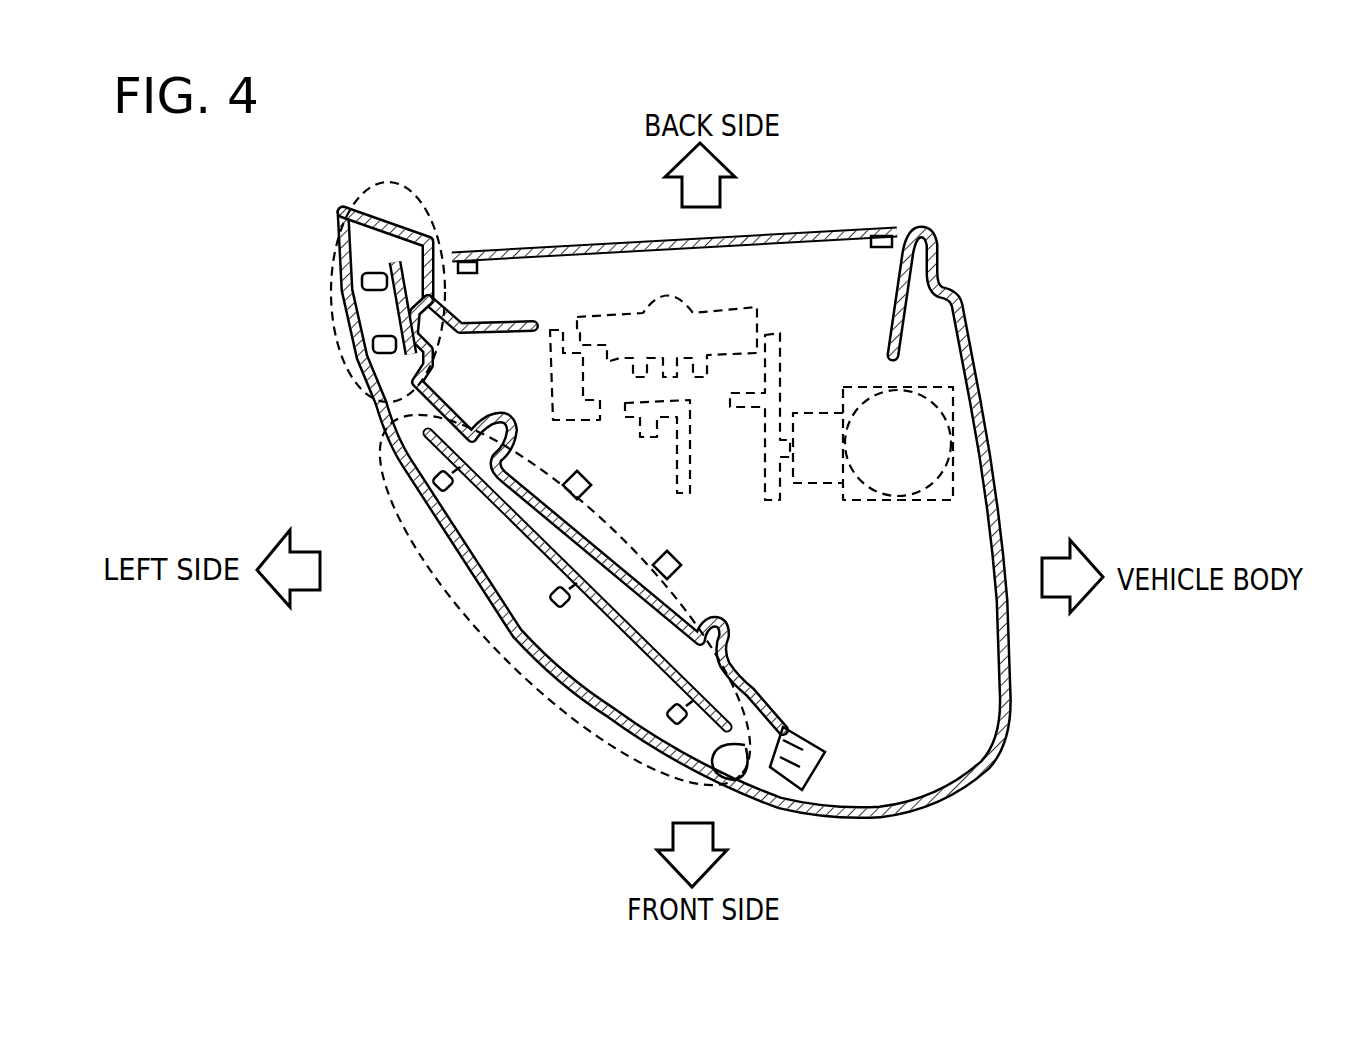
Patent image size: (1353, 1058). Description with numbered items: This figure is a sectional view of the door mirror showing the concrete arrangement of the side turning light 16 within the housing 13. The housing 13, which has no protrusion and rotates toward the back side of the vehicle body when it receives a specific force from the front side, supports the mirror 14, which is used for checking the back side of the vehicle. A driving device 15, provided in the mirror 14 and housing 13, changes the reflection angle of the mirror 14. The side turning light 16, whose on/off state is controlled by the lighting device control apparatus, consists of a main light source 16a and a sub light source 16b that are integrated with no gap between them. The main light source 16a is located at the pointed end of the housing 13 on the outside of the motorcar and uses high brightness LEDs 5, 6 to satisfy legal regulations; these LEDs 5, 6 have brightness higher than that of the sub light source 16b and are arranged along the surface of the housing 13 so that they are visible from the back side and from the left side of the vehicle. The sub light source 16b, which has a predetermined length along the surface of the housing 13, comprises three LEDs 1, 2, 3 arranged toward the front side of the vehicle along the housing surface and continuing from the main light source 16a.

The LED 1 is at (672, 722).
The LED 2 is at (553, 606).
The LED 3 is at (440, 491).
The LED 5 is at (362, 280).
The LED 6 is at (375, 342).
The housing 13 is at (995, 762).
The mirror 14 is at (470, 250).
The driving device 15 is at (808, 535).
The side turning light 16 is at (148, 382).
The main light source 16a is at (340, 378).
The sub light source 16b is at (382, 460).